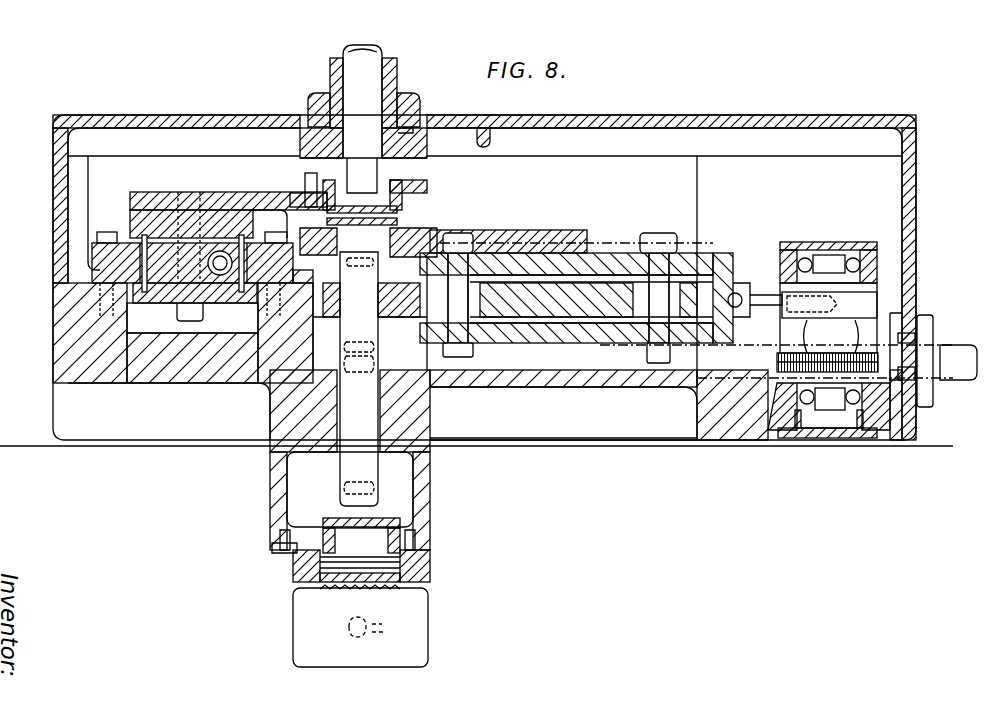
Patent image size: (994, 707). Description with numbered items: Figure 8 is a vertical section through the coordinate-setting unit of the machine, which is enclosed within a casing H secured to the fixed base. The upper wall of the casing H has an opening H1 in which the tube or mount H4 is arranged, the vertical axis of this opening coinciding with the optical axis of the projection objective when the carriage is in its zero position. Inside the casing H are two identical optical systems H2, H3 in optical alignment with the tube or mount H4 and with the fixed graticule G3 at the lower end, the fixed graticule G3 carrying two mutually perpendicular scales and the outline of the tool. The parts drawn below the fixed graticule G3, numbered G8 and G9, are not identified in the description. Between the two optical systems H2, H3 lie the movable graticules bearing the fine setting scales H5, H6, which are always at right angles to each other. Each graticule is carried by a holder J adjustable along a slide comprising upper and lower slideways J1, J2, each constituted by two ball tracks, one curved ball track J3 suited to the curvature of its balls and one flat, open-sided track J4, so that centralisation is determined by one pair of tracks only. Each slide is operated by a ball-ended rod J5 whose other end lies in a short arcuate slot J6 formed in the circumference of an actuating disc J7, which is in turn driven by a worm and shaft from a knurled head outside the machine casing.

The casing H is at (53, 130).
The opening H1 is at (413, 108).
The optical system H2 is at (352, 75).
The optical system H3 is at (358, 413).
The tube or mount H4 is at (390, 88).
The fine setting scale H5 is at (398, 220).
The fine setting scale H6 is at (400, 203).
The holder J is at (202, 197).
The upper slideway J1 is at (245, 222).
The lower slideway J2 is at (123, 282).
The curved ball track J3 is at (235, 217).
The flat ball track J4 is at (145, 238).
The ball-ended rod J5 is at (765, 293).
The arcuate slot J6 is at (802, 240).
The actuating disc J7 is at (857, 303).
The fixed graticule G3 is at (343, 514).
The motor housing G8 is at (348, 628).
The mounting flange G9 is at (322, 590).